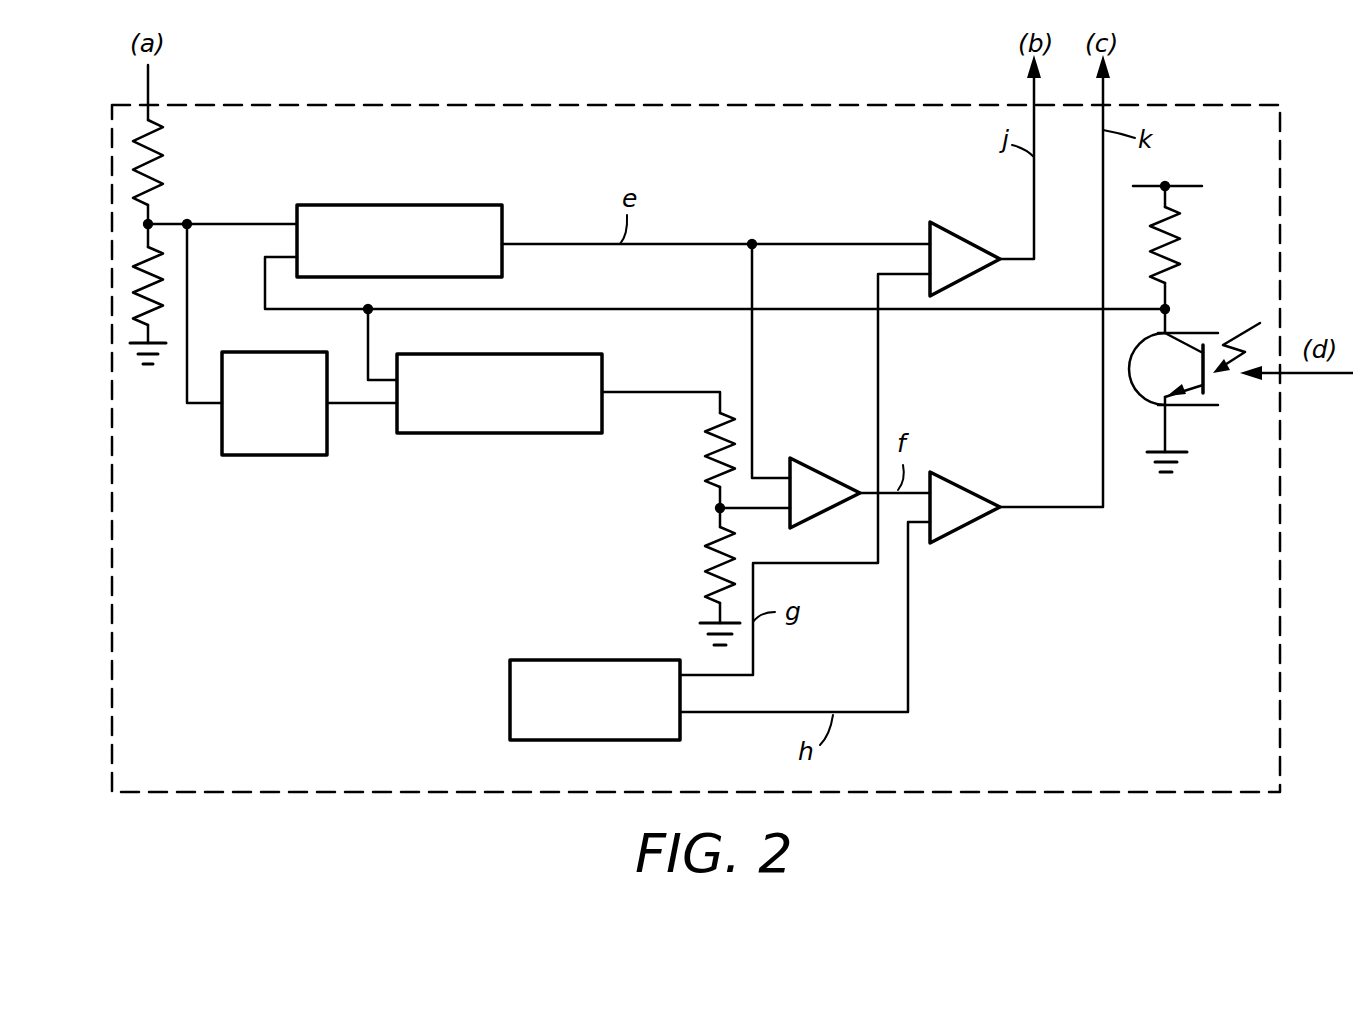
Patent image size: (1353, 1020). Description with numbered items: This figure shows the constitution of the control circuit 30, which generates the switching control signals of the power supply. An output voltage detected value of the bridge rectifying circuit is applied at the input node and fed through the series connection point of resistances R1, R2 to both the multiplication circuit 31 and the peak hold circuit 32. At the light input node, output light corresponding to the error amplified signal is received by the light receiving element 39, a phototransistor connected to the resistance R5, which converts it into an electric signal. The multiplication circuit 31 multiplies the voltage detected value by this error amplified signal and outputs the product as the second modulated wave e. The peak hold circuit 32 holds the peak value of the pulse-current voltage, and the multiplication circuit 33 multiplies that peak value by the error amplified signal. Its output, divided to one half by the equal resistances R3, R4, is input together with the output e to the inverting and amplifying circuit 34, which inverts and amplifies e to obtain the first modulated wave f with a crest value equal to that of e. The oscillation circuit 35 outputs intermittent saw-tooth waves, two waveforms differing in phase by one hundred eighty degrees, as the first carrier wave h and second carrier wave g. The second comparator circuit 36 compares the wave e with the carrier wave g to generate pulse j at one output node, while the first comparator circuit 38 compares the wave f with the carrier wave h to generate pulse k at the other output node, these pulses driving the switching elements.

The control circuit 30 is at (428, 105).
The multiplication circuit 31 is at (440, 205).
The peak hold circuit 32 is at (244, 457).
The multiplication circuit 33 is at (428, 435).
The inverting and amplifying circuit 34 is at (832, 463).
The oscillation circuit 35 is at (532, 660).
The second comparator circuit 36 is at (928, 235).
The first comparator circuit 38 is at (965, 527).
The light receiving element 39 is at (1198, 407).
The resistance R1 is at (140, 170).
The resistance R2 is at (140, 297).
The resistance R3 is at (710, 458).
The resistance R4 is at (710, 553).
The resistance R5 is at (1180, 240).